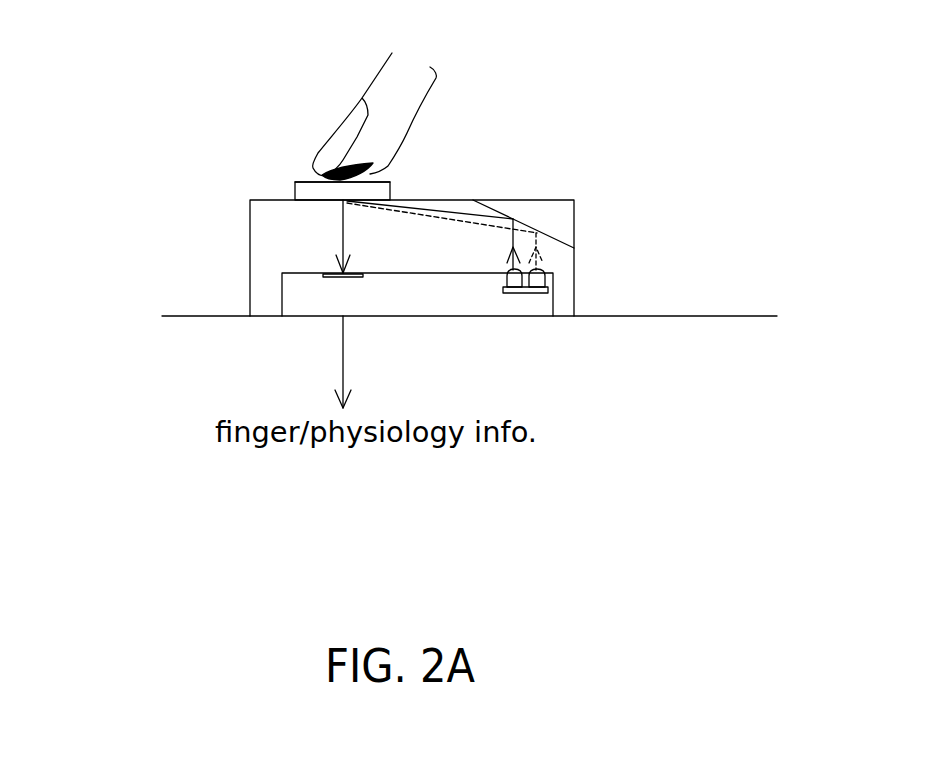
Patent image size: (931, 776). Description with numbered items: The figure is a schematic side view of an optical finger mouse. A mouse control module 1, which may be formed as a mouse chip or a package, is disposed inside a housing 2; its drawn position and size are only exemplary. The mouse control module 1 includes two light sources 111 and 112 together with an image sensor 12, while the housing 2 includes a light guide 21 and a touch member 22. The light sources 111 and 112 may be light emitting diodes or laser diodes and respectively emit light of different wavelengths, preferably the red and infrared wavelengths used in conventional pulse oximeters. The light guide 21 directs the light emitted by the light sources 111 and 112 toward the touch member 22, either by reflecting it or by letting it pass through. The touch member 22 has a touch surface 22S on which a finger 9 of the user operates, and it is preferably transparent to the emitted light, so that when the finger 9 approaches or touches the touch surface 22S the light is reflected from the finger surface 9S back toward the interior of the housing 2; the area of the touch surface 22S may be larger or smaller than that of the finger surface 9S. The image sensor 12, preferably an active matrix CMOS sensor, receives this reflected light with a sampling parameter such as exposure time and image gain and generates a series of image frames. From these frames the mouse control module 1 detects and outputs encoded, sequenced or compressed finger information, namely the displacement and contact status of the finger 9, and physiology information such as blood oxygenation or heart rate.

The mouse control module 1 is at (280, 297).
The housing 2 is at (250, 248).
The finger 9 is at (378, 78).
The finger surface 9S is at (323, 172).
The image sensor 12 is at (313, 272).
The light guide 21 is at (553, 227).
The touch member 22 is at (297, 187).
The touch surface 22S is at (383, 180).
The light source 111 is at (503, 294).
The light source 112 is at (548, 280).